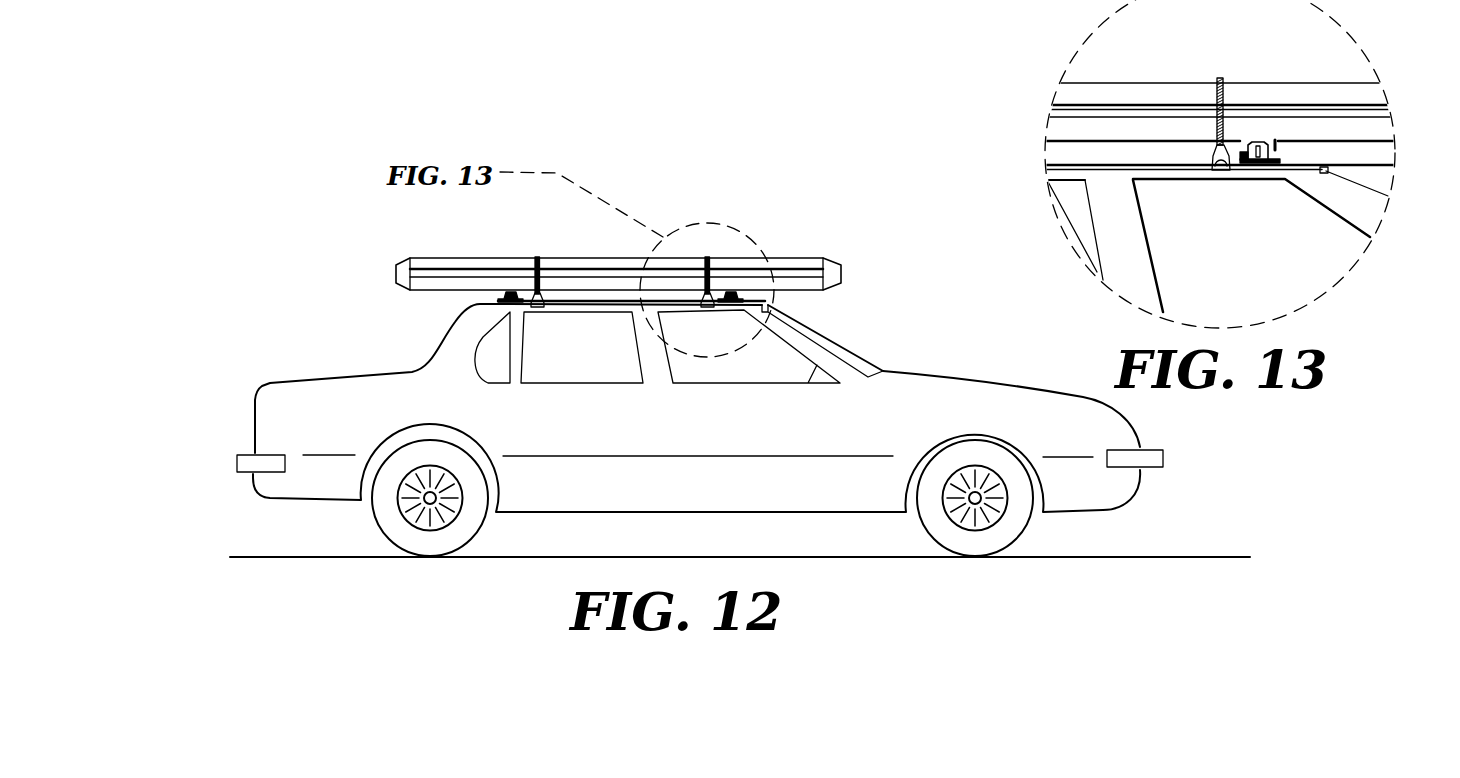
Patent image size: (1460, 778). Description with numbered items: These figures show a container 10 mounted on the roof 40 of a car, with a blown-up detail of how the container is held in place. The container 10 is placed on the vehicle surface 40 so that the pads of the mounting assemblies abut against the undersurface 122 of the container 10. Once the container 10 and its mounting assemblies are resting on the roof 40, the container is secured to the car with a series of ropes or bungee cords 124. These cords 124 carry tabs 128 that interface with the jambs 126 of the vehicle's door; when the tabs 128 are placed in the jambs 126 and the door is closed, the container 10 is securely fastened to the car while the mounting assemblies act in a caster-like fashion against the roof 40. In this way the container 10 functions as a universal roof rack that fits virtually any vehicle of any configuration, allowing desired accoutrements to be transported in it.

In FIG. 12, the container 10 is at (455, 246).
In FIG. 12, the roof 40 is at (477, 303).
In FIG. 13, the roof 40 is at (1303, 165).
In FIG. 12, the undersurface 122 is at (592, 297).
In FIG. 13, the undersurface 122 is at (1150, 143).
In FIG. 12, the cords 124 is at (537, 257).
In FIG. 13, the cords 124 is at (1224, 78).
In FIG. 13, the jambs 126 is at (1188, 163).
In FIG. 13, the tabs 128 is at (1232, 150).